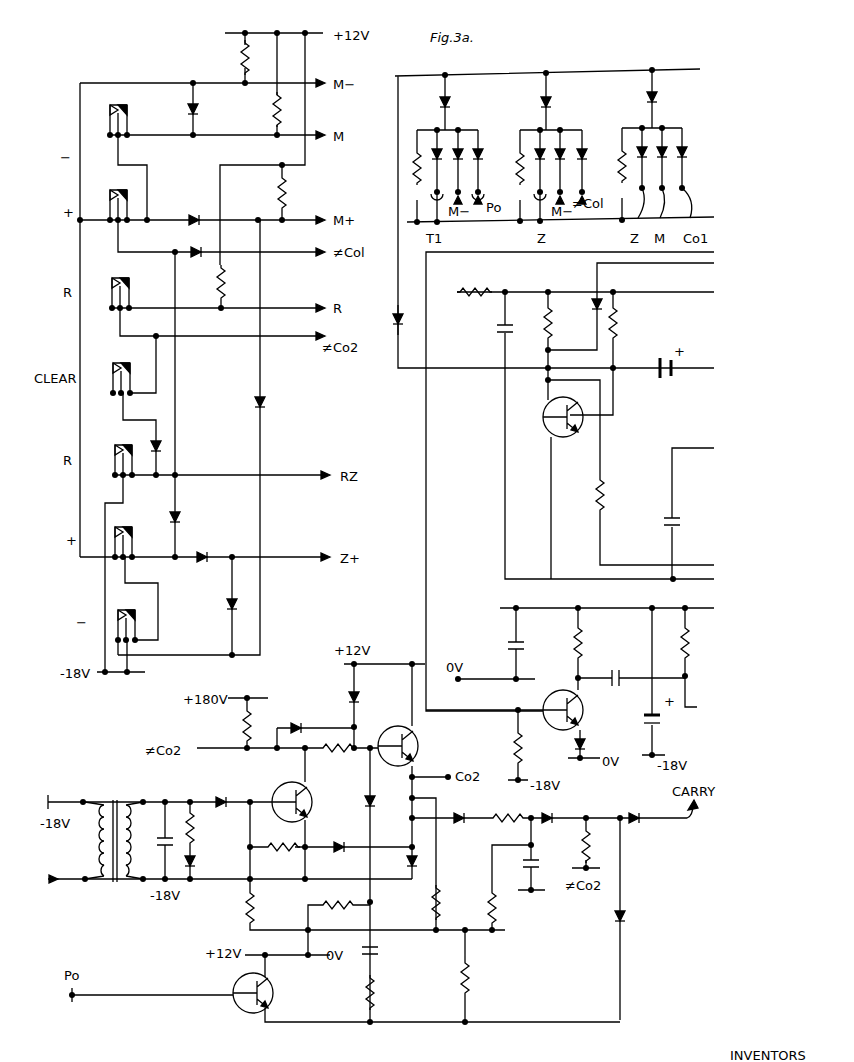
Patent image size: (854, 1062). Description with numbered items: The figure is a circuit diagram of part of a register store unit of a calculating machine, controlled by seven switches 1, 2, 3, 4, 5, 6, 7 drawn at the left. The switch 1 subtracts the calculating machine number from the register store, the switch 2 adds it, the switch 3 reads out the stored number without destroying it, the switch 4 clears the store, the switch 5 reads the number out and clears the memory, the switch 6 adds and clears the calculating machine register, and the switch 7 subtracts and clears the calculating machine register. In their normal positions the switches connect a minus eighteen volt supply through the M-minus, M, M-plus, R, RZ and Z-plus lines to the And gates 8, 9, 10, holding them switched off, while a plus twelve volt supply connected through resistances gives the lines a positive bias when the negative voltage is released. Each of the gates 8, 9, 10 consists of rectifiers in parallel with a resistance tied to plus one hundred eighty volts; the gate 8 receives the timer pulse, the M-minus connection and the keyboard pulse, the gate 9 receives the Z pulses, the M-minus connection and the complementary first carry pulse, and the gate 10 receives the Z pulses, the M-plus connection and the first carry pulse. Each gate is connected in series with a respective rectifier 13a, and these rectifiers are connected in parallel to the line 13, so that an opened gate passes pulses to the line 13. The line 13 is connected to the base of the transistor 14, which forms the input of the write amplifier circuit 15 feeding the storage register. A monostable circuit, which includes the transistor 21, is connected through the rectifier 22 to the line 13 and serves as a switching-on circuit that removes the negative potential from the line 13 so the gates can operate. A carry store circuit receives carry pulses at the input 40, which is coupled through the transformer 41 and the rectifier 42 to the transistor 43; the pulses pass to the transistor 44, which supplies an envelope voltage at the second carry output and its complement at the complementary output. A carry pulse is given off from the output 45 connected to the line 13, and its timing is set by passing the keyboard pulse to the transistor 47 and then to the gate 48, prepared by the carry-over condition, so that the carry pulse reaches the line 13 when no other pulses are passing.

The switch 1 is at (130, 126).
The switch 2 is at (128, 210).
The switch 3 is at (130, 297).
The switch 4 is at (131, 380).
The switch 5 is at (133, 462).
The switch 6 is at (133, 543).
The switch 7 is at (136, 628).
The And gate 8 is at (447, 138).
The And gate 9 is at (562, 138).
The And gate 10 is at (660, 136).
The line 13 is at (426, 472).
The rectifier 13a is at (665, 90).
The transistor 14 is at (560, 684).
The amplification circuit 15 is at (625, 649).
The transistor 21 is at (570, 437).
The rectifier 22 is at (385, 315).
The input 40 is at (68, 883).
The transformer 41 is at (115, 890).
The rectifier 42 is at (222, 795).
The transistor 43 is at (280, 788).
The transistor 44 is at (395, 771).
The output 45 is at (695, 812).
The transistor 47 is at (232, 983).
The gate 48 is at (547, 875).